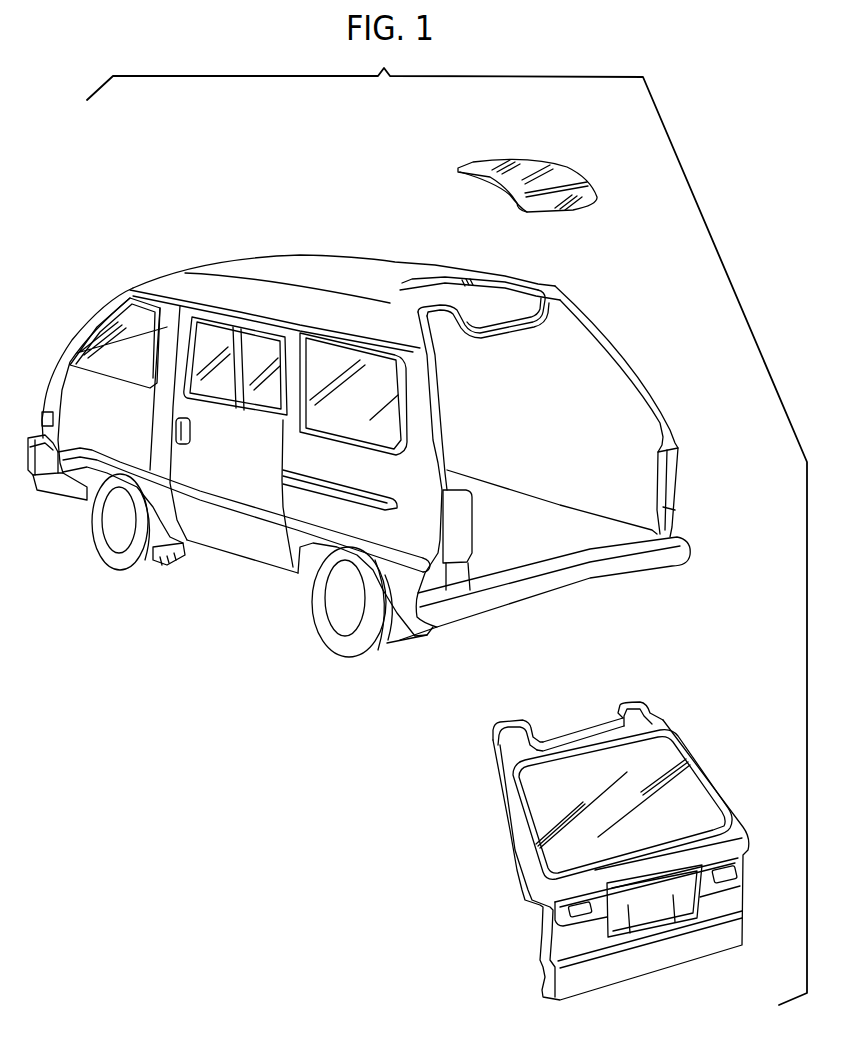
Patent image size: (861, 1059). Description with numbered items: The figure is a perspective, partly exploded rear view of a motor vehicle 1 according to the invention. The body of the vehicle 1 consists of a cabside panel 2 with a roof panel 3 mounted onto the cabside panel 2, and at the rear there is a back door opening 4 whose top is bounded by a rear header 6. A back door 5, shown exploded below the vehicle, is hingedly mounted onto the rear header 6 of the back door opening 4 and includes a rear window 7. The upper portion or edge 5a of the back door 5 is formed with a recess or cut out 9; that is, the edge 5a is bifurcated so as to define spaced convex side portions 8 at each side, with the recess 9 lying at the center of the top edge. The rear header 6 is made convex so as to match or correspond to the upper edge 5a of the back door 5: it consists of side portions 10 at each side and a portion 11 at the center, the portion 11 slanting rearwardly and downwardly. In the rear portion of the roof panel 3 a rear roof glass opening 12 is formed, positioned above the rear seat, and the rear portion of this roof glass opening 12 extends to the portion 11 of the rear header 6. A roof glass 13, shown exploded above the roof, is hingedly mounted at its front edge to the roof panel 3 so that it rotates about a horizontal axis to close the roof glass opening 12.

The vehicle 1 is at (302, 252).
The cabside panel 2 is at (307, 507).
The roof panel 3 is at (380, 270).
The back door opening 4 is at (583, 350).
The back door 5 is at (510, 832).
The upper portion or edge of the back door 5a is at (497, 720).
The rear header 6 is at (497, 333).
The rear window 7 is at (658, 755).
The convex side portions 8 is at (523, 727).
The recess or cut out 9 is at (562, 732).
The side portions of the rear header 10 is at (545, 286).
The center portion of the rear header 11 is at (513, 313).
The rear roof glass opening 12 is at (458, 295).
The roof glass 13 is at (567, 178).